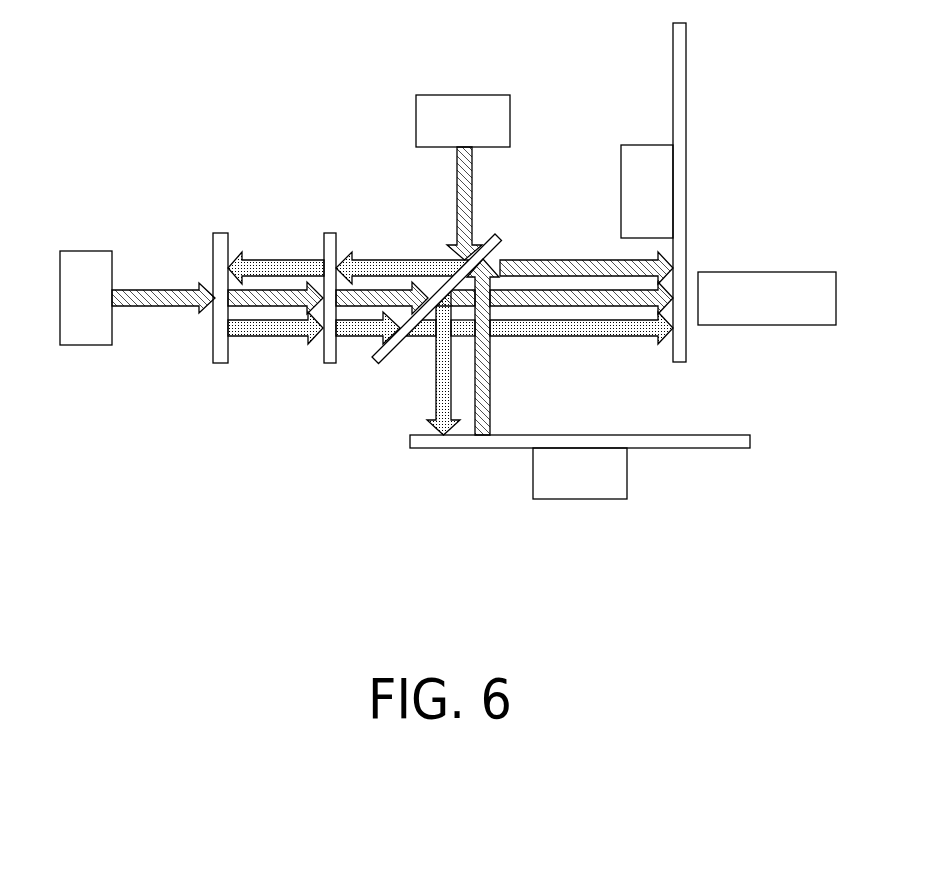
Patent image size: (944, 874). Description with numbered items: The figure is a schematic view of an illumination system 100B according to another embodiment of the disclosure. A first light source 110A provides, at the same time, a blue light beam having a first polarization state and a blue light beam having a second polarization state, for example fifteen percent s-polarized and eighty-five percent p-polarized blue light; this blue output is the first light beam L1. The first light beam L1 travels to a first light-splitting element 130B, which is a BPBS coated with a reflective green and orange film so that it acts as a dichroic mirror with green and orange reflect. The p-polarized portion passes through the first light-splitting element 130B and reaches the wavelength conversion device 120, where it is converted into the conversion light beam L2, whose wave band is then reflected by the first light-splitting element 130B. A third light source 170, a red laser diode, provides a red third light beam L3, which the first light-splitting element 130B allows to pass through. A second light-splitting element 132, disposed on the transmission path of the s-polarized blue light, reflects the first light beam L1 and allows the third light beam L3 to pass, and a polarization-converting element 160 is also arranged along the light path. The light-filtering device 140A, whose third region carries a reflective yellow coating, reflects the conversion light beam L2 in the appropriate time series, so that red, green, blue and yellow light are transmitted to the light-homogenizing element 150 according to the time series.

The illumination system 100B is at (808, 619).
The first light source 110A is at (465, 110).
The wavelength conversion device 120 is at (583, 482).
The first light-splitting element 130B is at (498, 238).
The second light-splitting element 132 is at (223, 242).
The light-filtering device 140A is at (645, 160).
The light-homogenizing element 150 is at (772, 287).
The polarization-converting element 160 is at (330, 242).
The third light source 170 is at (88, 267).
The first light beam L1 is at (455, 178).
The conversion light beam L2 is at (492, 372).
The third light beam L3 is at (155, 304).